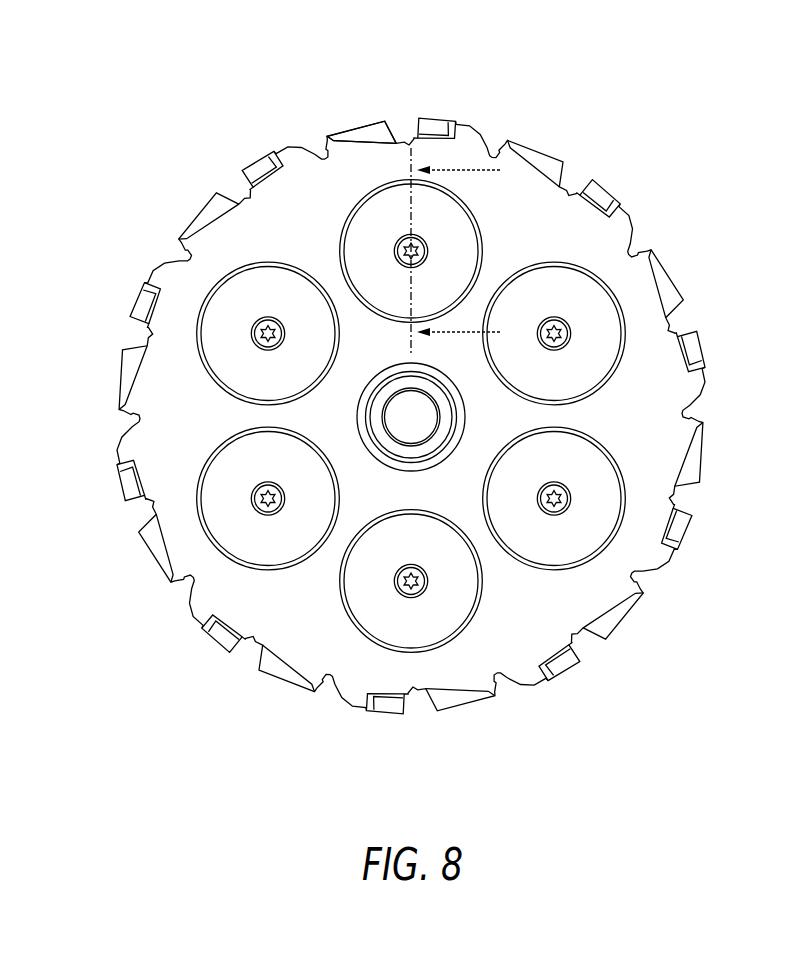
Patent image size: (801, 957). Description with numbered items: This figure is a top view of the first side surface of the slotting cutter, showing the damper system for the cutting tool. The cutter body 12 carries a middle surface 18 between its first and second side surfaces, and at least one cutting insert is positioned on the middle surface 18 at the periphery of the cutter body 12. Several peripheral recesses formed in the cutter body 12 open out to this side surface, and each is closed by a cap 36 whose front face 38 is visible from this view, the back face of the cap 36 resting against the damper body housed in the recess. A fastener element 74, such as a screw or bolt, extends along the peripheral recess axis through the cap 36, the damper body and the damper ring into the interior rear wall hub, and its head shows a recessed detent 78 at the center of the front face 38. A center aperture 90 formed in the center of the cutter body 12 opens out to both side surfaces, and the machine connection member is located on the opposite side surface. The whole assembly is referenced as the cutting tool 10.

The cutting tool 10 is at (446, 401).
The cutter body 12 is at (281, 216).
The middle surface 18 is at (350, 120).
The cap 36 is at (588, 569).
The front face 38 is at (448, 577).
The fastener element 74 is at (392, 589).
The recessed detent 78 is at (413, 593).
The center aperture 90 is at (415, 412).